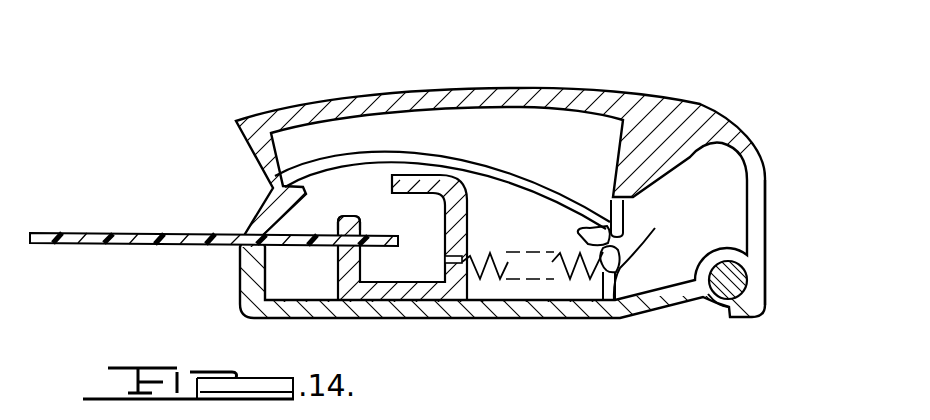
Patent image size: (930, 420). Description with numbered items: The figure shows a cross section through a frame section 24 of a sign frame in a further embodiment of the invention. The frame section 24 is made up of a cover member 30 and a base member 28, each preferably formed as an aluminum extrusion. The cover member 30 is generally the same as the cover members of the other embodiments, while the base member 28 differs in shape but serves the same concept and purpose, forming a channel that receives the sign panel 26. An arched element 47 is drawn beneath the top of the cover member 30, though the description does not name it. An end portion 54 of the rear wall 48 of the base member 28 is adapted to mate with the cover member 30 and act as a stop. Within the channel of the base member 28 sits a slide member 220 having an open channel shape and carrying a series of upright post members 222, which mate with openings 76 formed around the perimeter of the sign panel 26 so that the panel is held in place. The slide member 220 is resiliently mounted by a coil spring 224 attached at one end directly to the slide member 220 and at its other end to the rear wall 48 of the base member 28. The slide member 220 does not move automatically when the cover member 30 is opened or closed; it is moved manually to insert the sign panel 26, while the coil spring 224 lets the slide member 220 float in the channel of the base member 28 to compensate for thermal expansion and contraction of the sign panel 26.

The cover member 30 is at (534, 90).
The frame section 24 is at (786, 183).
The base member 28 is at (465, 316).
The cover 47 is at (526, 168).
The end portion 54 is at (634, 198).
The side member 48 is at (650, 251).
The slide member 220 is at (457, 220).
The post member 222 is at (345, 216).
The sign panel 26 is at (76, 232).
The opening 76 is at (325, 251).
The coil spring 224 is at (557, 282).